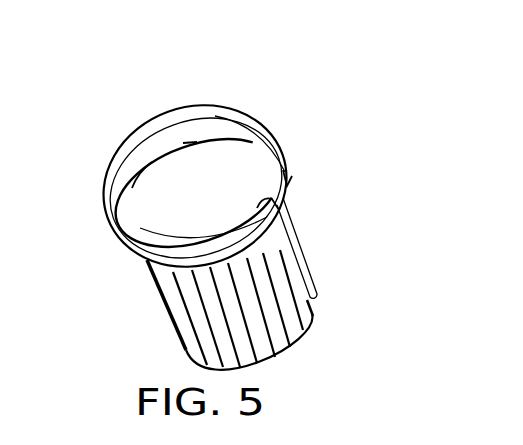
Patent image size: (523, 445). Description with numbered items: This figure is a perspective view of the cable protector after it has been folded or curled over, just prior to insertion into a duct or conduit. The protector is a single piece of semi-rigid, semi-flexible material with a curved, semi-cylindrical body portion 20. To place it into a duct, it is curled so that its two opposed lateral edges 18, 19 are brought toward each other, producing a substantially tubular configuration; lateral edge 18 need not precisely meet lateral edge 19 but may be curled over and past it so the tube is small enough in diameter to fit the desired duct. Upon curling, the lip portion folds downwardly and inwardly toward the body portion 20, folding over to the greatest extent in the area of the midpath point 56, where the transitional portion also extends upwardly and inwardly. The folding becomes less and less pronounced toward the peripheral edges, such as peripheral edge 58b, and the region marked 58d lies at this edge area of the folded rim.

The lateral edge 18 is at (311, 317).
The lateral edge 19 is at (308, 253).
The body portion 20 is at (188, 313).
The midpath point 56 is at (123, 143).
The rim tab 58d is at (276, 160).
The peripheral edge 58b is at (286, 178).